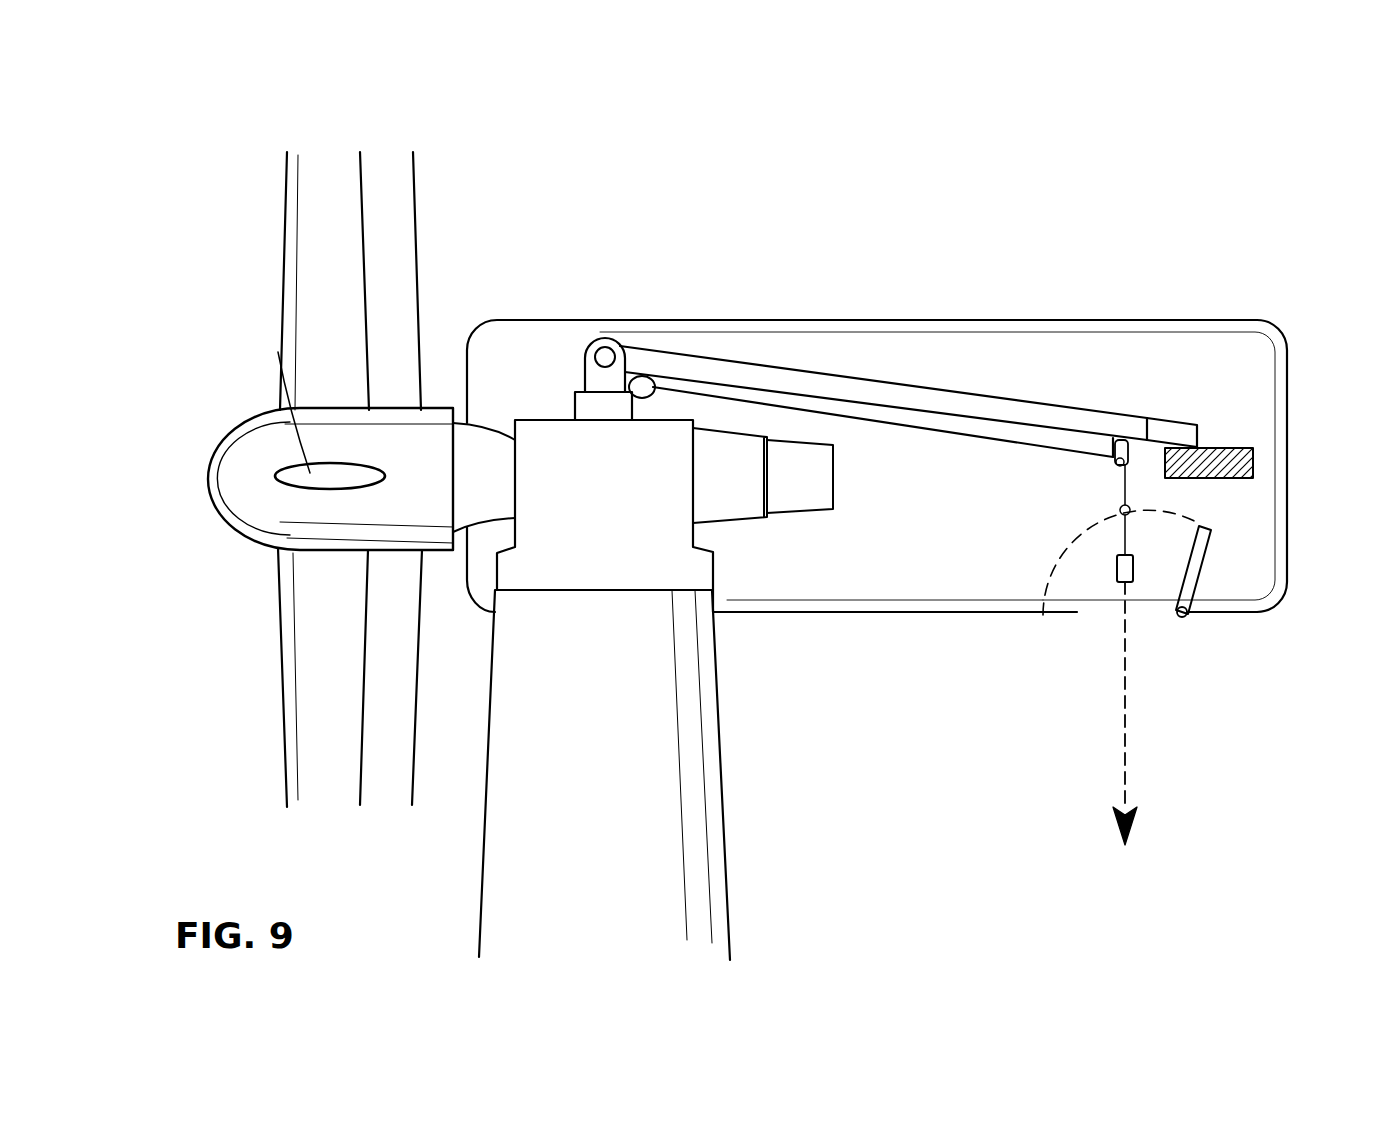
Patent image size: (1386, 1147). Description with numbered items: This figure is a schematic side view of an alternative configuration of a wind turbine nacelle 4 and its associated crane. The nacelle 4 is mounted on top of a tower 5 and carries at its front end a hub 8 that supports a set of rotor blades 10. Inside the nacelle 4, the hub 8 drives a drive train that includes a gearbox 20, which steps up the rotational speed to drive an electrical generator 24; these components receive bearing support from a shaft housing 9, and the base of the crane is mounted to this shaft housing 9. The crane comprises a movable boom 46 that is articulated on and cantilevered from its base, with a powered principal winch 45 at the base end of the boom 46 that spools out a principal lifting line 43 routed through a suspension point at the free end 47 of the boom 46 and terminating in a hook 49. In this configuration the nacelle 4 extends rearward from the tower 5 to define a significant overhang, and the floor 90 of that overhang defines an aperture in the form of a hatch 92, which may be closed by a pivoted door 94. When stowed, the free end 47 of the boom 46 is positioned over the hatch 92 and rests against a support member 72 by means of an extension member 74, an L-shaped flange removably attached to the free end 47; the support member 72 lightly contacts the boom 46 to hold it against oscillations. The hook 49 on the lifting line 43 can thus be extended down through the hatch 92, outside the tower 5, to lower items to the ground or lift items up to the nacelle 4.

The nacelle 4 is at (1088, 318).
The tower 5 is at (720, 727).
The hub 8 is at (243, 440).
The shaft housing 9 is at (543, 420).
The rotor blades 10 is at (288, 352).
The gearbox 20 is at (737, 522).
The electrical generator 24 is at (795, 513).
The principal lifting line 43 is at (1127, 697).
The principal winch 45 is at (693, 395).
The boom 46 is at (957, 376).
The free end of the boom 47 is at (1107, 425).
The hook 49 is at (1117, 565).
The support member 72 is at (1230, 448).
The extension member 74 is at (1170, 428).
The floor 90 is at (960, 613).
The hatch 92 is at (1083, 622).
The pivoted door 94 is at (1197, 573).